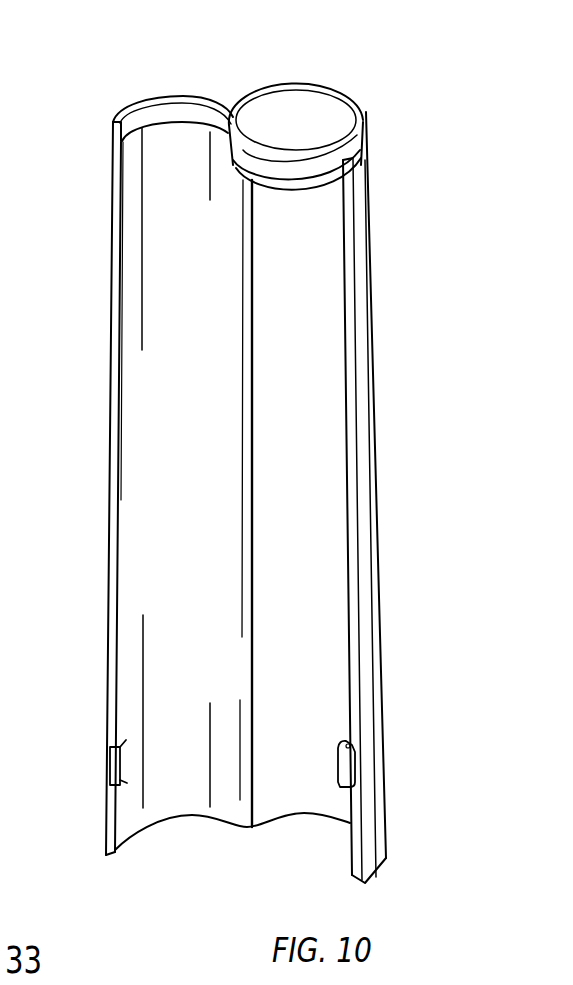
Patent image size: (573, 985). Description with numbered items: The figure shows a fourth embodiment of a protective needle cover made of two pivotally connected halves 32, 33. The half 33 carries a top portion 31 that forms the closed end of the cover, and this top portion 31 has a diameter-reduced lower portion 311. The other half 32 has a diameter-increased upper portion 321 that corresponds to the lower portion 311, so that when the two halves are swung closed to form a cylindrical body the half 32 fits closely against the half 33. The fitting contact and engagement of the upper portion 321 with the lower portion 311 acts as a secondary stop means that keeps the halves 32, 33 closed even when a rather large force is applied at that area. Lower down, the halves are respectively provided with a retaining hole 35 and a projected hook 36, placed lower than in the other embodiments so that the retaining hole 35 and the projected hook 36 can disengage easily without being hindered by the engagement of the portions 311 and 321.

The top portion 31 is at (361, 127).
The diameter-reduced lower portion 311 is at (307, 190).
The half 32 is at (140, 340).
The diameter-increased upper portion 321 is at (166, 100).
The half 33 is at (377, 450).
The retaining hole 35 is at (115, 763).
The projected hook 36 is at (350, 762).